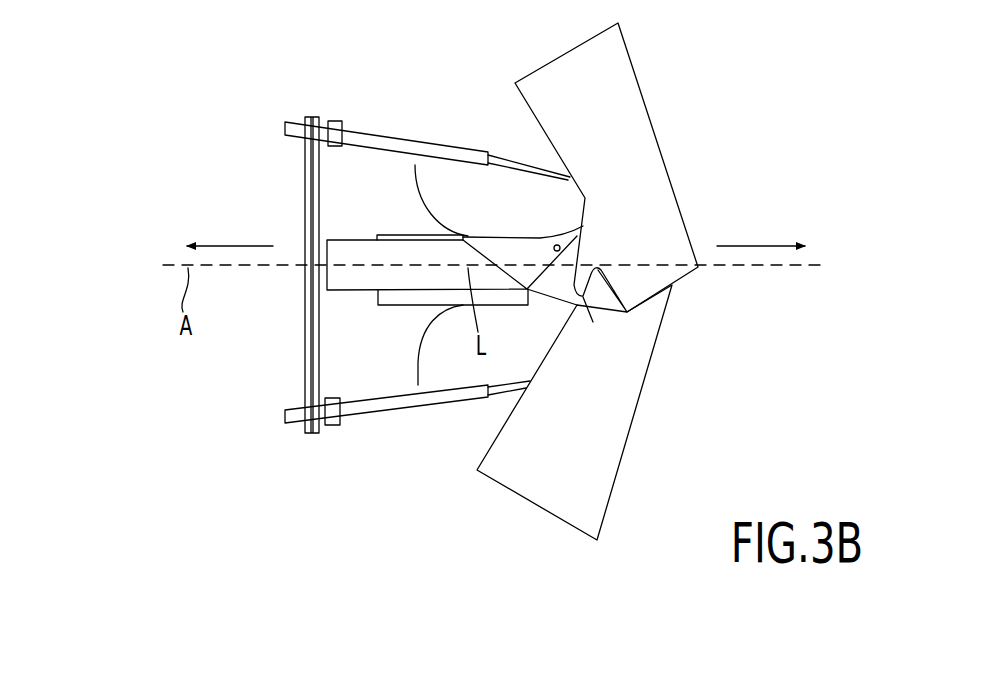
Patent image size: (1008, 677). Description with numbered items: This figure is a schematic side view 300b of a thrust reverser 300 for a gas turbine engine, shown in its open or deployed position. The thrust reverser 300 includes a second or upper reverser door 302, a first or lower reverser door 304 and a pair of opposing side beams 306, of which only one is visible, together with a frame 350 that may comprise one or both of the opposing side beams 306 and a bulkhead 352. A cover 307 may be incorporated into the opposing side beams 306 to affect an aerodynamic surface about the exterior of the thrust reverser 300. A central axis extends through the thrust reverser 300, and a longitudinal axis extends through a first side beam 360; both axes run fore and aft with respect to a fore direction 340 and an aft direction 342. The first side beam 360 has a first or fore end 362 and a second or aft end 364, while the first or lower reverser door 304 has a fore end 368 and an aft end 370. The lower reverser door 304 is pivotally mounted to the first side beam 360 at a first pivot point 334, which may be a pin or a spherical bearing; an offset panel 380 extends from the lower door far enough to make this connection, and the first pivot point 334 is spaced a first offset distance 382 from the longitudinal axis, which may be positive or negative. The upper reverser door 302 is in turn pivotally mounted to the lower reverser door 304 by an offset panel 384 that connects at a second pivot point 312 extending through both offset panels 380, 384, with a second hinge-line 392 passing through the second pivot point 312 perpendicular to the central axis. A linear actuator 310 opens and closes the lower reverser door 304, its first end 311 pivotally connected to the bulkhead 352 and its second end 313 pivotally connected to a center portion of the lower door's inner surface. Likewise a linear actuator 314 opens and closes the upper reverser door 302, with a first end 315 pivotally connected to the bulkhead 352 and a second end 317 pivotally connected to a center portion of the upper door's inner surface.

The thrust reverser 300 is at (398, 50).
The schematic side view 300b is at (795, 128).
The second or upper reverser door 302 is at (627, 40).
The first or lower reverser door 304 is at (630, 453).
The opposing side beams 306 is at (385, 300).
The cover 307 is at (342, 250).
The linear actuator 310 is at (292, 415).
The first end 311 is at (360, 410).
The second pivot point 312 is at (588, 305).
The second end 313 is at (503, 392).
The linear actuator 314 is at (297, 123).
The first end 315 is at (362, 143).
The second end 317 is at (507, 153).
The first pivot point 334 is at (563, 245).
The fore direction 340 is at (222, 245).
The aft direction 342 is at (772, 245).
The frame 350 is at (408, 338).
The bulkhead 352 is at (303, 362).
The first side beam 360 is at (380, 297).
The first or fore end 362 is at (397, 237).
The second or aft end 364 is at (533, 243).
The fore end 368 is at (595, 508).
The aft end 370 is at (670, 308).
The offset panel 380 is at (558, 275).
The first offset distance 382 is at (510, 248).
The offset panel 384 is at (625, 312).
The second hinge-line 392 is at (592, 268).